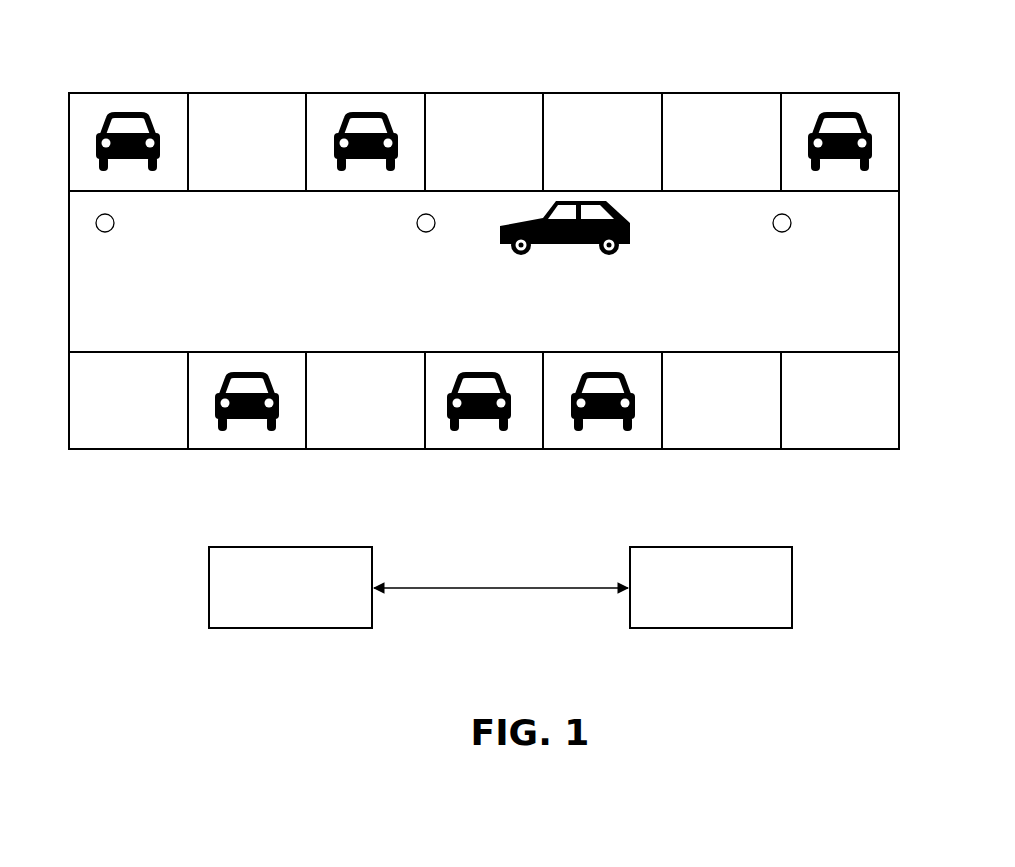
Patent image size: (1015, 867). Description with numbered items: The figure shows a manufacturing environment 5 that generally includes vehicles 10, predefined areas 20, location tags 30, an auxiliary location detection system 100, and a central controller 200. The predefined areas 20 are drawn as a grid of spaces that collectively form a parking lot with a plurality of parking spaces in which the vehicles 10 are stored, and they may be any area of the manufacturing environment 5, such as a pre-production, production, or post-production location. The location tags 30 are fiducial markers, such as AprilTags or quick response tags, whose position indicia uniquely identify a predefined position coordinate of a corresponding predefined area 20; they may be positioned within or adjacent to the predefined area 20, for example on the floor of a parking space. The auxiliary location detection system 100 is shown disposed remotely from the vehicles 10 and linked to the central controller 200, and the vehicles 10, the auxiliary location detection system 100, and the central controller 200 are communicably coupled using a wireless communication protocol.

The manufacturing environment 5 is at (965, 60).
The vehicles 10 is at (127, 112).
The predefined areas 20 is at (470, 110).
The location tags 30 is at (114, 222).
The auxiliary location detection system 100 is at (792, 563).
The central controller 200 is at (372, 553).